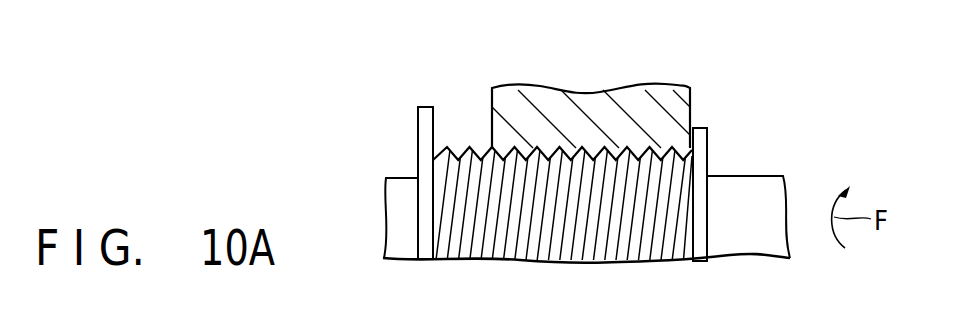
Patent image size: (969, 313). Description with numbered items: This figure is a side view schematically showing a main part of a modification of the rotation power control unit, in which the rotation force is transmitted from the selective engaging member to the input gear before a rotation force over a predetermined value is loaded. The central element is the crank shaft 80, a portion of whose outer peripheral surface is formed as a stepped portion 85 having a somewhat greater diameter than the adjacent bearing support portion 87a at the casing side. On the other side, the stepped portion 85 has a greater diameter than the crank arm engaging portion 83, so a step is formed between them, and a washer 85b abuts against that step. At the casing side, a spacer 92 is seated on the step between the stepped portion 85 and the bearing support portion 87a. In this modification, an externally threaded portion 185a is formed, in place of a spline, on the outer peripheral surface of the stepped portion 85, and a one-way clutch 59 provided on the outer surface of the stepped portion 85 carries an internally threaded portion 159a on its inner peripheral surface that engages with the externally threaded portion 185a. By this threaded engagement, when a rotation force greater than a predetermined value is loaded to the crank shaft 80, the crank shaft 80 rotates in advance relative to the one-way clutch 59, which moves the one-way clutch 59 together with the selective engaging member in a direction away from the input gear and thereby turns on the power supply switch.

The one-way clutch 59 is at (692, 100).
The internally threaded portion 159a is at (604, 144).
The external thread teeth 185a is at (439, 147).
The stepped portion 85 is at (645, 240).
The washer 85b is at (418, 126).
The spacer 92 is at (707, 138).
The crank arm engaging portion 83 is at (392, 203).
The crank shaft 80 is at (781, 170).
The bearing support portion 87a is at (750, 243).